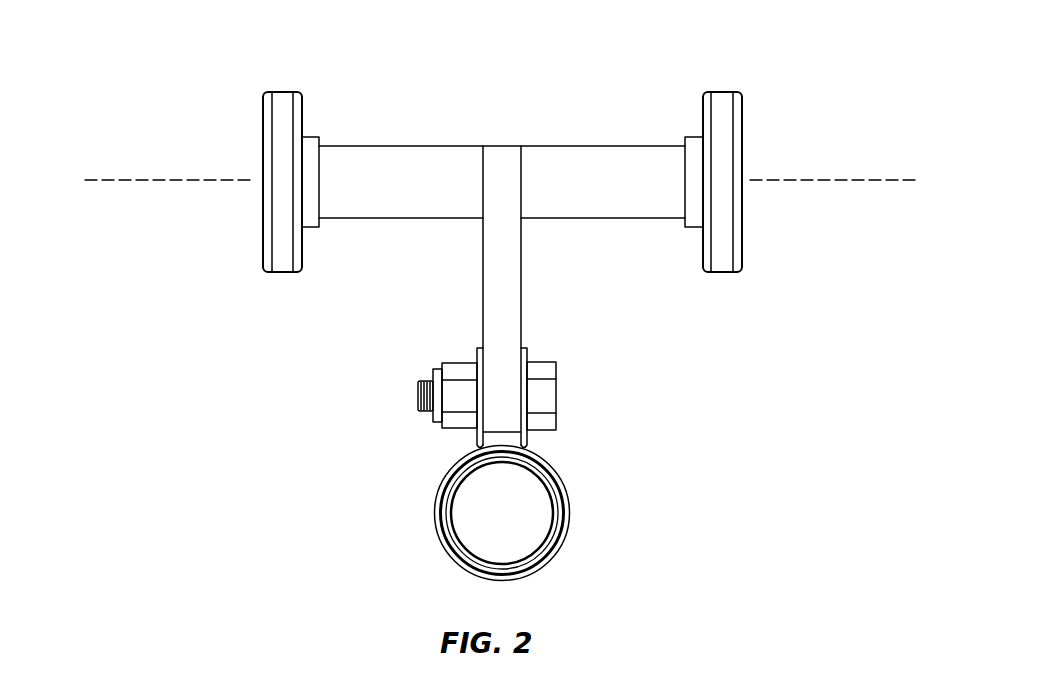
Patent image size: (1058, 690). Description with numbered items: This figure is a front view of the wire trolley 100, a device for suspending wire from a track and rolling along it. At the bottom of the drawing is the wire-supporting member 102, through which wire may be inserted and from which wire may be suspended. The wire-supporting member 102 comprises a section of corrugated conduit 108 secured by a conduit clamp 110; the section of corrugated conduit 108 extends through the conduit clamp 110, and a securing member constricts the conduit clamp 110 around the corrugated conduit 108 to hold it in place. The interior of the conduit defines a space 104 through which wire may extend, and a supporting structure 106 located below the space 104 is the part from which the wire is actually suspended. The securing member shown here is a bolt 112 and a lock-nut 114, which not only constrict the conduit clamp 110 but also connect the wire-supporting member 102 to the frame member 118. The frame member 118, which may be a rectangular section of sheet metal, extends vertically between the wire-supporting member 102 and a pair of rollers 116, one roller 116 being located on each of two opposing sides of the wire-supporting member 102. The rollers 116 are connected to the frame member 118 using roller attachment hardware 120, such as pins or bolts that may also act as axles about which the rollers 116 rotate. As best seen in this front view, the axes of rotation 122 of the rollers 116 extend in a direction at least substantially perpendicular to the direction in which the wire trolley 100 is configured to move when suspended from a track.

The wire trolley 100 is at (148, 74).
The wire-supporting member 102 is at (590, 530).
The space 104 is at (518, 517).
The supporting structure 106 is at (495, 581).
The section of corrugated conduit 108 is at (447, 526).
The conduit clamp 110 is at (437, 485).
The bolt 112 is at (541, 400).
The lock-nut 114 is at (457, 387).
The rollers 116 is at (283, 105).
The frame member 118 is at (507, 289).
The roller attachment hardware 120 is at (422, 168).
The axes of rotation 122 is at (222, 180).